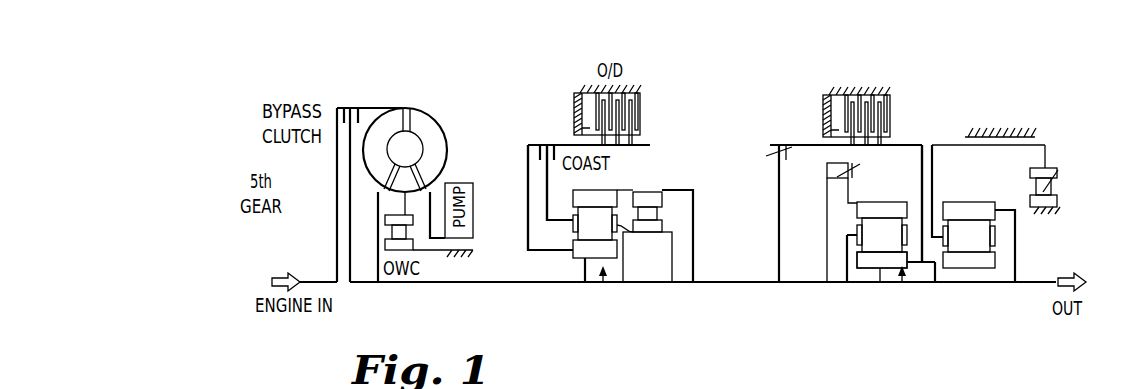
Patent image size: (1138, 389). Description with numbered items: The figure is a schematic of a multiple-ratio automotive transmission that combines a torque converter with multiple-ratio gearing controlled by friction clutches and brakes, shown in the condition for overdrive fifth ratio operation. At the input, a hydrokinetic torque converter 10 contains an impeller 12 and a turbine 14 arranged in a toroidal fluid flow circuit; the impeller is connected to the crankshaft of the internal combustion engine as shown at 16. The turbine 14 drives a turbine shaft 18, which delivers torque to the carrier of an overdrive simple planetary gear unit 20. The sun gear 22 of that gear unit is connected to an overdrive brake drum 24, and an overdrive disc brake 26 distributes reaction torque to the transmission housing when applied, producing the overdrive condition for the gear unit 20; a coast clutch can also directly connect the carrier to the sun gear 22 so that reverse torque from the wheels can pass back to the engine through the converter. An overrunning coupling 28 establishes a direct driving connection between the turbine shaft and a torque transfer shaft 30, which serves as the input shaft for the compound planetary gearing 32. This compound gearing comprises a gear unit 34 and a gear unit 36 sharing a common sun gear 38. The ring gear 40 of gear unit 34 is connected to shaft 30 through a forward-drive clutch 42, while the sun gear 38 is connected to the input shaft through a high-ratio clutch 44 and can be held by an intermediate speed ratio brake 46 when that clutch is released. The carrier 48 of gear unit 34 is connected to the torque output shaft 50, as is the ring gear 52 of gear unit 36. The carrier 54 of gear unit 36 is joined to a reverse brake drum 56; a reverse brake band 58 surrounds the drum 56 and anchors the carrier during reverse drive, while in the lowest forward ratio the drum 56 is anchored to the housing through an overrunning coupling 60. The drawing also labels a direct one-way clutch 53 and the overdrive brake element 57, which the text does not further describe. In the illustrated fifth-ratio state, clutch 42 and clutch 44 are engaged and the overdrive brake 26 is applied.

The hydrokinetic torque converter 10 is at (445, 115).
The impeller 12 is at (422, 117).
The turbine 14 is at (394, 111).
The engine connection 16 is at (322, 278).
The turbine shaft 18 is at (507, 284).
The overdrive simple planetary gear unit 20 is at (603, 278).
The sun gear 22 is at (580, 257).
The overdrive brake drum 24 is at (560, 143).
The overdrive disc brake 26 is at (530, 143).
The overrunning coupling 28 is at (652, 212).
The torque transfer shaft 30 is at (712, 284).
The compound planetary gearing 32 is at (968, 292).
The gear unit 34 is at (845, 257).
The gear unit 36 is at (958, 202).
The common sun gear 38 is at (868, 269).
The ring gear 40 is at (900, 208).
The forward-drive clutch 42 is at (838, 172).
The high-ratio clutch 44 is at (768, 150).
The intermediate speed ratio brake 46 is at (607, 190).
The carrier 48 is at (582, 259).
The torque output shaft 50 is at (543, 143).
The ring gear 52 is at (547, 175).
The direct one-way clutch 53 is at (640, 228).
The carrier 54 is at (960, 202).
The reverse brake drum 56 is at (805, 143).
The overdrive brake 57 is at (641, 118).
The reverse brake band 58 is at (1022, 110).
The overrunning coupling 60 is at (1052, 172).